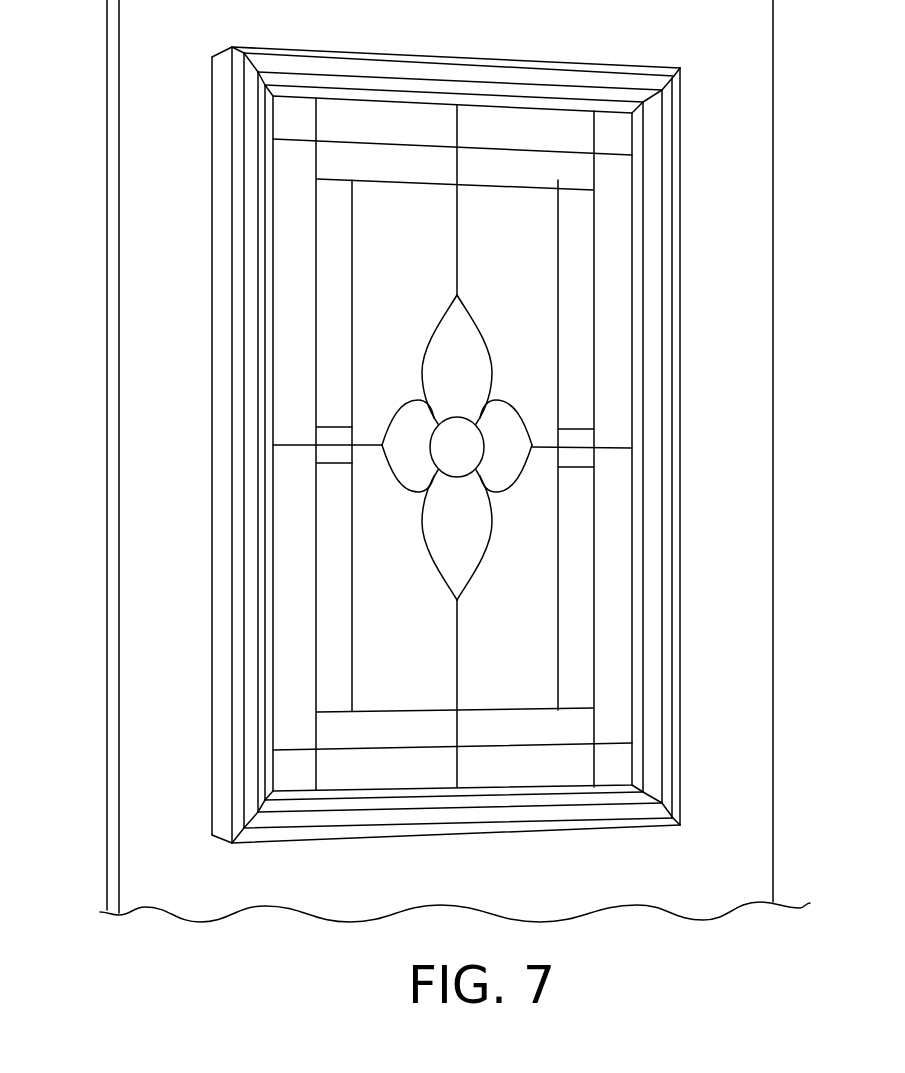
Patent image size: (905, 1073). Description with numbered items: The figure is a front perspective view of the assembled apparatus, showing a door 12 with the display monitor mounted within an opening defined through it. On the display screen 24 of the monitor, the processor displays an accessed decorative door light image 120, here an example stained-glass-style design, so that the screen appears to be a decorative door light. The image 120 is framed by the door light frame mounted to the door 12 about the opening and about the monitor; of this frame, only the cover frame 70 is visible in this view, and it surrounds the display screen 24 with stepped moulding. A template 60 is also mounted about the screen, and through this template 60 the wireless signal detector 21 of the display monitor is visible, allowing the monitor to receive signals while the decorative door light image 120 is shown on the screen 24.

The door 12 is at (108, 512).
The wireless signal detector 21 is at (270, 728).
The display screen 24 is at (620, 310).
The template 60 is at (637, 643).
The cover frame 70 is at (390, 62).
The decorative door light image 120 is at (530, 219).